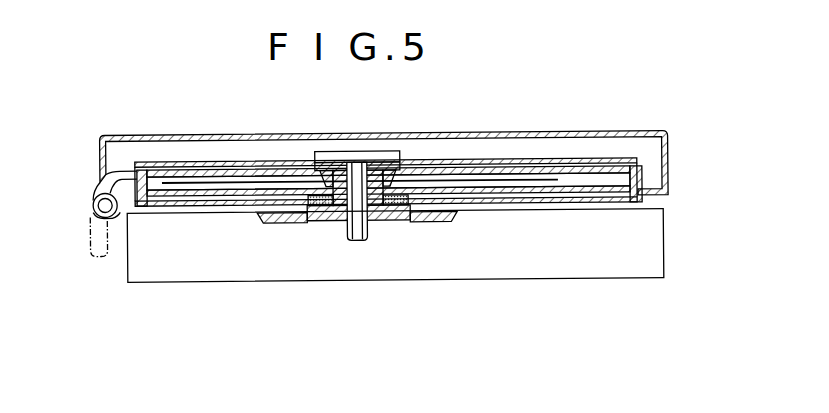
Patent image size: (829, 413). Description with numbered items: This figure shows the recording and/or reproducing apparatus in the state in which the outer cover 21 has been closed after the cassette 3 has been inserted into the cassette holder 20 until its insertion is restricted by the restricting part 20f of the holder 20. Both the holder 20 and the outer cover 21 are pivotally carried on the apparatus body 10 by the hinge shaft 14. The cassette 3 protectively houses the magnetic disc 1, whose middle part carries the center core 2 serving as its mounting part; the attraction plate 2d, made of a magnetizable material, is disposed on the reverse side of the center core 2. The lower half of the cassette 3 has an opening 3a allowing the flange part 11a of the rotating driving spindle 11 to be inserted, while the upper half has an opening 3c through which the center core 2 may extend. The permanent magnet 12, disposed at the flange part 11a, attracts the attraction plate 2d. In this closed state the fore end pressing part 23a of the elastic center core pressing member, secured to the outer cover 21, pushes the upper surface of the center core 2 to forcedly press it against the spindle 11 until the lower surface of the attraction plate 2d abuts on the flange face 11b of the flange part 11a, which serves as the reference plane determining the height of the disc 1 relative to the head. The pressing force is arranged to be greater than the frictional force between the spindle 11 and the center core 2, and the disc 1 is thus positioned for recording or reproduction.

The magnetic disc 1 is at (512, 160).
The center core 2 is at (400, 152).
The attraction plate 2d is at (433, 222).
The cassette 3 is at (642, 178).
The opening 3a is at (298, 214).
The opening 3c is at (313, 150).
The body 10 is at (624, 284).
The rotating driving spindle 11 is at (348, 226).
The flange part 11a is at (391, 222).
The flange face 11b is at (419, 162).
The permanent magnet 12 is at (313, 222).
The hinge shaft 14 is at (93, 209).
The cassette holder 20 is at (605, 158).
The restricting part 20f is at (94, 197).
The outer cover 21 is at (565, 133).
The fore end pressing part 23a is at (357, 162).